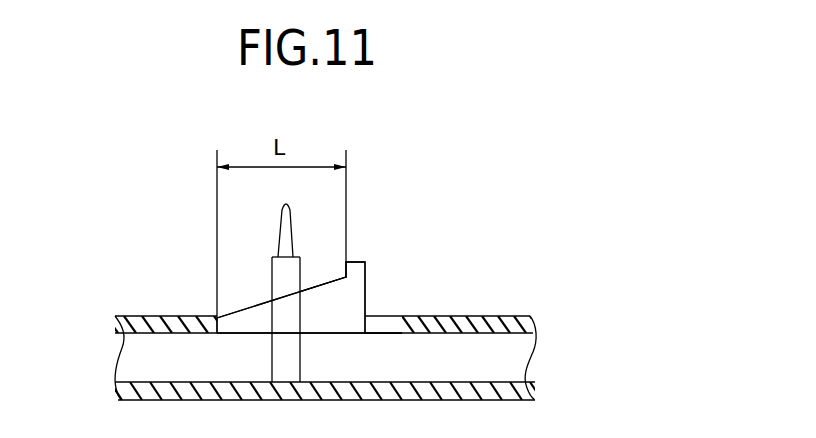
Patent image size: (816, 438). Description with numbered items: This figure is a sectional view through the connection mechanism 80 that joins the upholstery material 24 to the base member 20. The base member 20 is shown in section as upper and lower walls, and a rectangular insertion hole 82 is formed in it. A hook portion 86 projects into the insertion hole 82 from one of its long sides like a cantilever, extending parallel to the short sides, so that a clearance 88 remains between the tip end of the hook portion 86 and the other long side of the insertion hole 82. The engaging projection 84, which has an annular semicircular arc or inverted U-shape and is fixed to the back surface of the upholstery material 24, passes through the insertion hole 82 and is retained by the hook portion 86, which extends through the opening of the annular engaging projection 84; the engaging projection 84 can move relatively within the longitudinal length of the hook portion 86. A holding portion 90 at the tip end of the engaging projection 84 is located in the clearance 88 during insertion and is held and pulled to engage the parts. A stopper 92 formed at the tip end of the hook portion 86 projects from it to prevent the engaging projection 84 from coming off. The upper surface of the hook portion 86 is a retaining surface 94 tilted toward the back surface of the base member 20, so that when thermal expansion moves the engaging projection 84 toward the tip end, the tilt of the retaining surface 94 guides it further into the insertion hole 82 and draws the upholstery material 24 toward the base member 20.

The base member 20 is at (488, 313).
The upholstery material 24 is at (307, 400).
The connection mechanism 80 is at (182, 198).
The insertion hole 82 is at (398, 317).
The engaging projection 84 is at (287, 276).
The hook portion 86 is at (333, 243).
The clearance 88 is at (400, 287).
The holding portion 90 is at (277, 232).
The stopper 92 is at (352, 260).
The retaining surface 94 is at (247, 303).